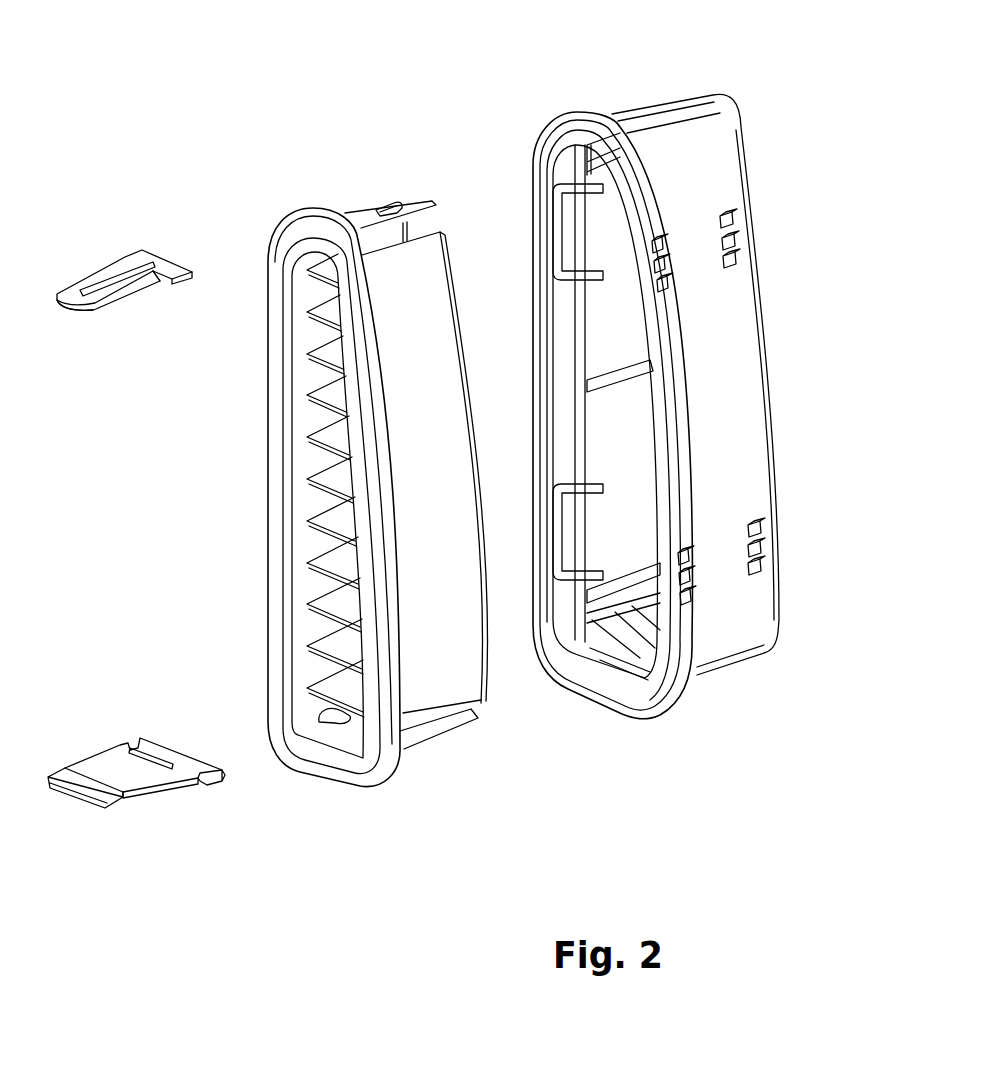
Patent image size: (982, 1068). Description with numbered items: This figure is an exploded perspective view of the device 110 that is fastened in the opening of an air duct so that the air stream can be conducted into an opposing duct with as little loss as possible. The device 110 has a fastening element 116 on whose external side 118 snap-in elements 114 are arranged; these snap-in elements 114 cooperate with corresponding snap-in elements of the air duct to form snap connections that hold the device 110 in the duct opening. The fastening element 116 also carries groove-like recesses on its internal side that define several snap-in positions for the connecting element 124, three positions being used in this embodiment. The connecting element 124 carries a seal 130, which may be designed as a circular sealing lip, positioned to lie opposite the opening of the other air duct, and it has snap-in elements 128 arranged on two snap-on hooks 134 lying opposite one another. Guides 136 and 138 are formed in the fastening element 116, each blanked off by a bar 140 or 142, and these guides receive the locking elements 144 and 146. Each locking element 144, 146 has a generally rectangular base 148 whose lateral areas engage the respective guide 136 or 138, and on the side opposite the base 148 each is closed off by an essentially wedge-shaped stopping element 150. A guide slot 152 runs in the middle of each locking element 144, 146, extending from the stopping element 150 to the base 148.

The device 110 is at (236, 151).
The snap-in elements 114 is at (742, 256).
The fastening element 116 is at (737, 155).
The external side 118 is at (752, 392).
The connecting element 124 is at (458, 326).
The snap-in elements 128 is at (397, 204).
The seal 130 is at (357, 773).
The snap-on hooks 134 is at (431, 204).
The guide 136 is at (562, 133).
The guide 138 is at (590, 630).
The bar 140 is at (540, 150).
The bar 142 is at (623, 662).
The locking element 144 is at (137, 293).
The locking element 146 is at (148, 793).
The base 148 is at (187, 280).
The stopping element 150 is at (80, 313).
The guide slot 152 is at (108, 276).